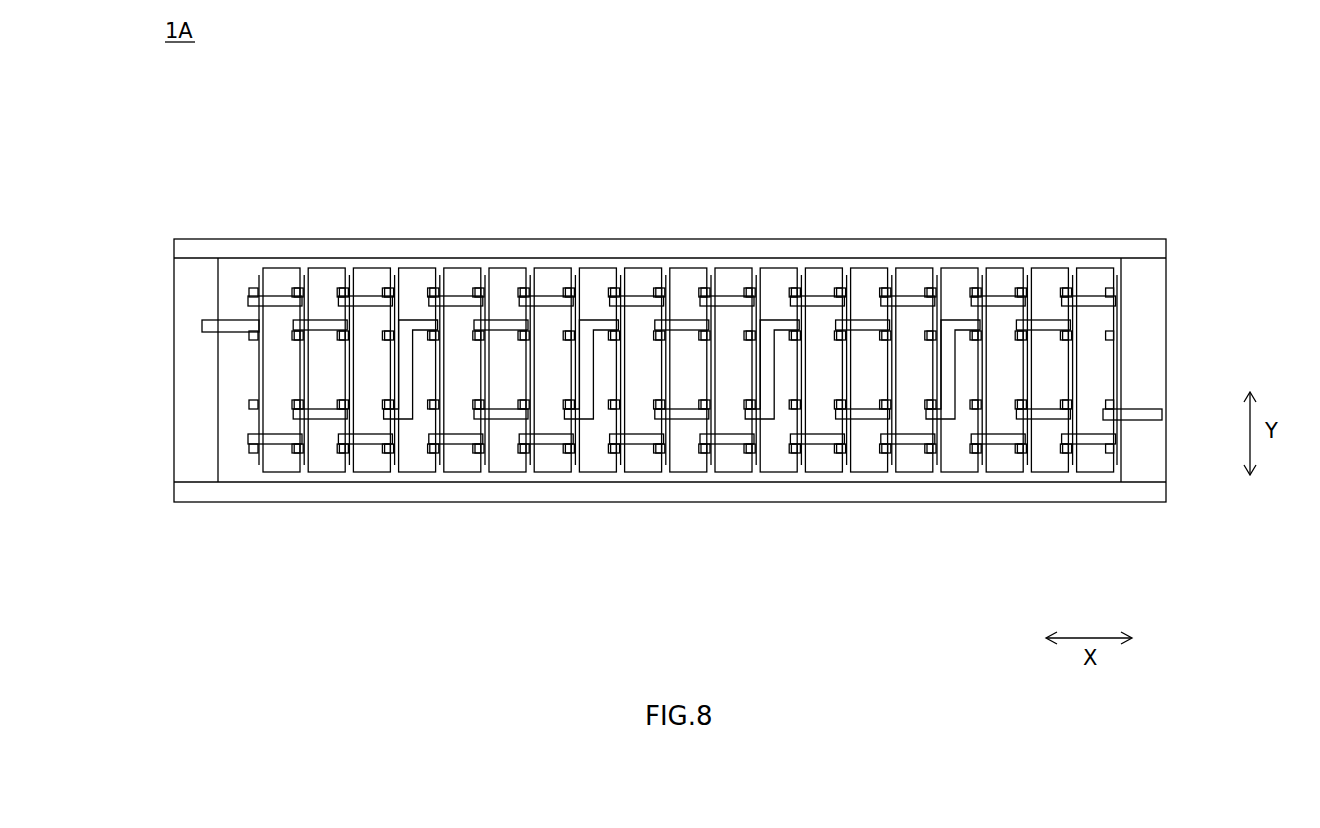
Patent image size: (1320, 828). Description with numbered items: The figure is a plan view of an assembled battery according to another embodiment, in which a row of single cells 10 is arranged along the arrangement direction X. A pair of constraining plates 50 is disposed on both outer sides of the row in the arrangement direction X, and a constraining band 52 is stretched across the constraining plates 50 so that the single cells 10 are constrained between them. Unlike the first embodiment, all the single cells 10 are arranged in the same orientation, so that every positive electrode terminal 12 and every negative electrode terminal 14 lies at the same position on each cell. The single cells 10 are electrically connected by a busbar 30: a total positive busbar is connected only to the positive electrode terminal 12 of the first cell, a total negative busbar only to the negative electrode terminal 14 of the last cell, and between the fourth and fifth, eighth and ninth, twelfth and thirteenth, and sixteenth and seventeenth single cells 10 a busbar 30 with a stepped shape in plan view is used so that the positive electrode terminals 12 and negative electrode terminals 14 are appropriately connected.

The single cell 10 is at (275, 469).
The positive electrode terminal 12 is at (250, 289).
The negative electrode terminal 14 is at (252, 452).
The busbar 30 is at (232, 322).
The constraining plate 50 is at (182, 450).
The constraining band 52 is at (723, 247).